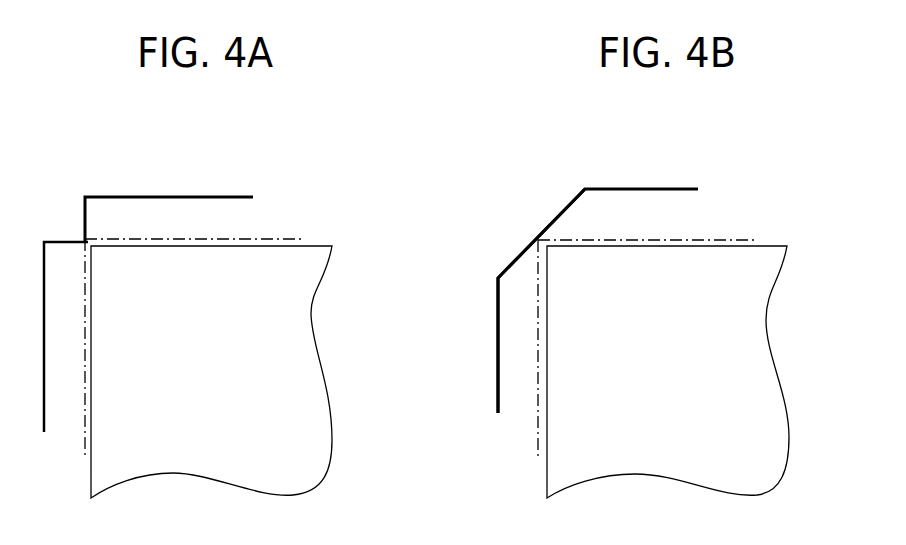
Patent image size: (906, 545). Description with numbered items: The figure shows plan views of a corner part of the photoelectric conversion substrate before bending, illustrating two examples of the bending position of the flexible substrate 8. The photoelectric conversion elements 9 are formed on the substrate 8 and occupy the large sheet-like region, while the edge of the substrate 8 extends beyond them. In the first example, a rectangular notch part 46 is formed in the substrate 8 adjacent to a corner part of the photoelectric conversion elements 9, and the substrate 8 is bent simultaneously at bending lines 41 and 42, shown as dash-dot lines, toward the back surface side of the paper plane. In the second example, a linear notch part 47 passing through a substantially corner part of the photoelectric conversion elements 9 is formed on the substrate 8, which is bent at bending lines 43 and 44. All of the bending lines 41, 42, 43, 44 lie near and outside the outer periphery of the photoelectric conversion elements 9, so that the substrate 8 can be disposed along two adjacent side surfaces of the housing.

In FIG. 4A, the substrate 8 is at (176, 209).
In FIG. 4B, the substrate 8 is at (630, 204).
In FIG. 4A, the photoelectric conversion elements 9 is at (262, 490).
In FIG. 4B, the photoelectric conversion elements 9 is at (710, 488).
In FIG. 4A, the bending line 41 is at (263, 239).
In FIG. 4A, the bending line 42 is at (85, 442).
In FIG. 4B, the bending line 43 is at (722, 240).
In FIG. 4B, the bending line 44 is at (538, 433).
In FIG. 4A, the rectangular notch part 46 is at (63, 241).
In FIG. 4B, the linear notch part 47 is at (527, 254).